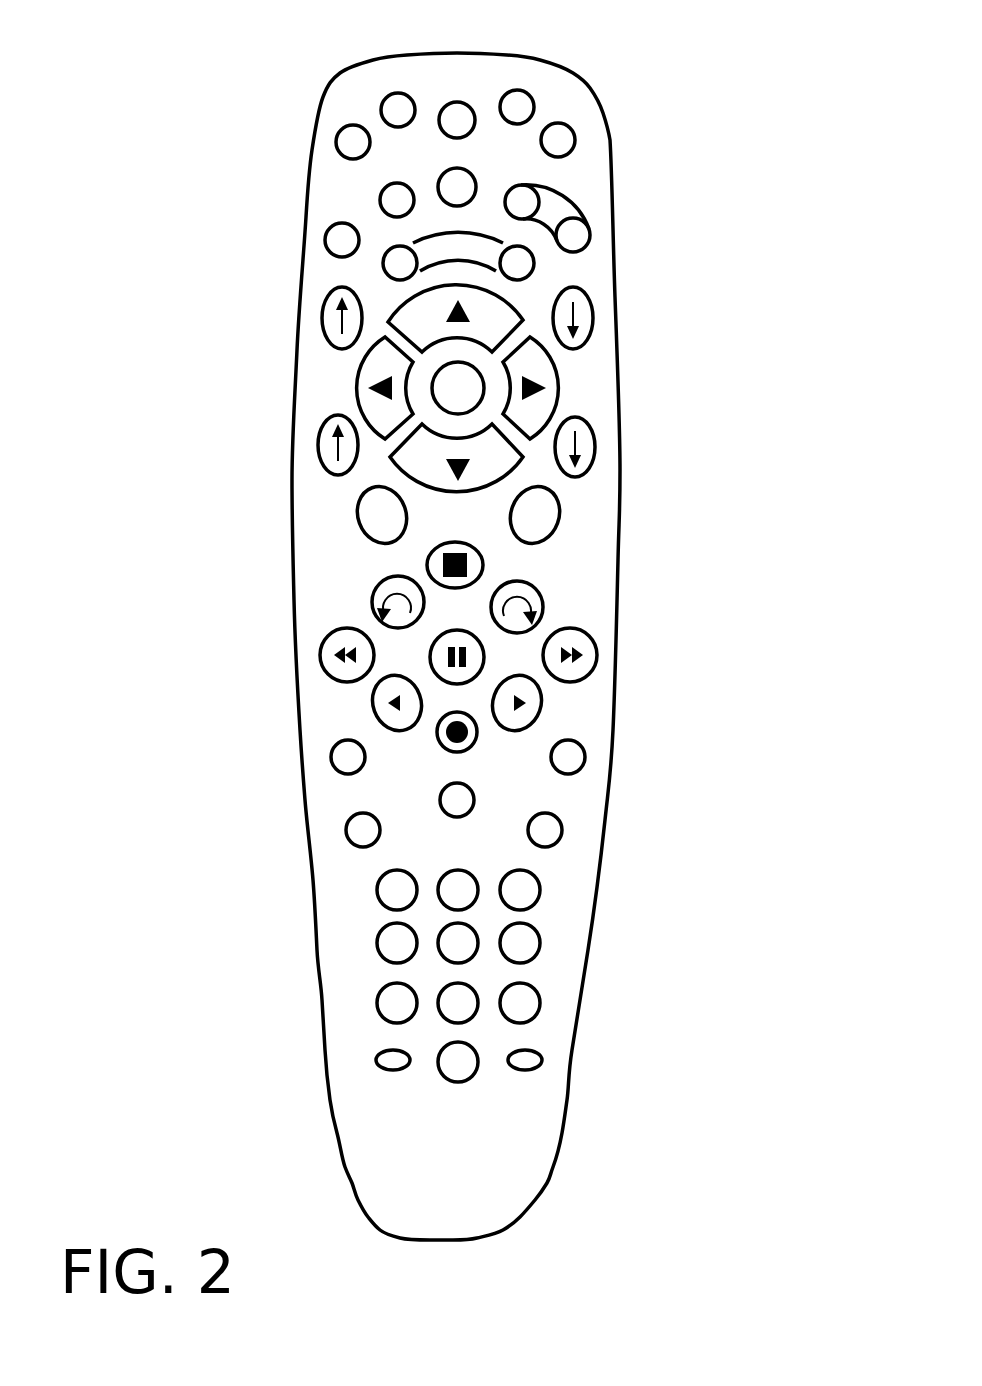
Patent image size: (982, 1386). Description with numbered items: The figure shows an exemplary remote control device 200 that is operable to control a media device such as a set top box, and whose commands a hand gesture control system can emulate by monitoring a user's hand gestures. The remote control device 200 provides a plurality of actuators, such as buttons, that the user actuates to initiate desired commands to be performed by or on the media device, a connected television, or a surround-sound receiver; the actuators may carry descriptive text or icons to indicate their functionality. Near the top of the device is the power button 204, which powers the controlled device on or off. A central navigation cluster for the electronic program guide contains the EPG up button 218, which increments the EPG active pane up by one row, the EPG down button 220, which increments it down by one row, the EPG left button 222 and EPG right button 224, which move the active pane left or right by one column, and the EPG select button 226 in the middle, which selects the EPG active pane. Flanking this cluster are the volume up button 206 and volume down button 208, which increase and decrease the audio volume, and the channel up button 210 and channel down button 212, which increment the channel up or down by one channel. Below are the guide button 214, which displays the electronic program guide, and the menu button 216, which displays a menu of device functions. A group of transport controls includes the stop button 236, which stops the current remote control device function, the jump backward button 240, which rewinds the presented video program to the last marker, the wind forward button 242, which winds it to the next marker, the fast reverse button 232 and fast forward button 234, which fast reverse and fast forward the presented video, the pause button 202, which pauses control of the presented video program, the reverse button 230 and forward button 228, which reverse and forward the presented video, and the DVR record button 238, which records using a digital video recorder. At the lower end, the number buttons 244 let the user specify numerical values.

The remote control device 200 is at (313, 125).
The pause button 202 is at (433, 650).
The power button 204 is at (458, 101).
The volume up button 206 is at (322, 295).
The volume down button 208 is at (593, 318).
The channel up button 210 is at (318, 445).
The channel down button 212 is at (595, 447).
The guide button 214 is at (357, 513).
The menu button 216 is at (557, 520).
The EPG up button 218 is at (510, 302).
The EPG down button 220 is at (497, 478).
The EPG left button 222 is at (358, 394).
The EPG right button 224 is at (557, 397).
The EPG select button 226 is at (433, 372).
The forward button 228 is at (543, 707).
The reverse button 230 is at (373, 707).
The fast reverse button 232 is at (322, 652).
The fast forward button 234 is at (597, 652).
The stop button 236 is at (485, 515).
The DVR record button 238 is at (467, 751).
The jump backward button 240 is at (378, 588).
The wind forward button 242 is at (577, 578).
The number buttons 244 is at (348, 931).